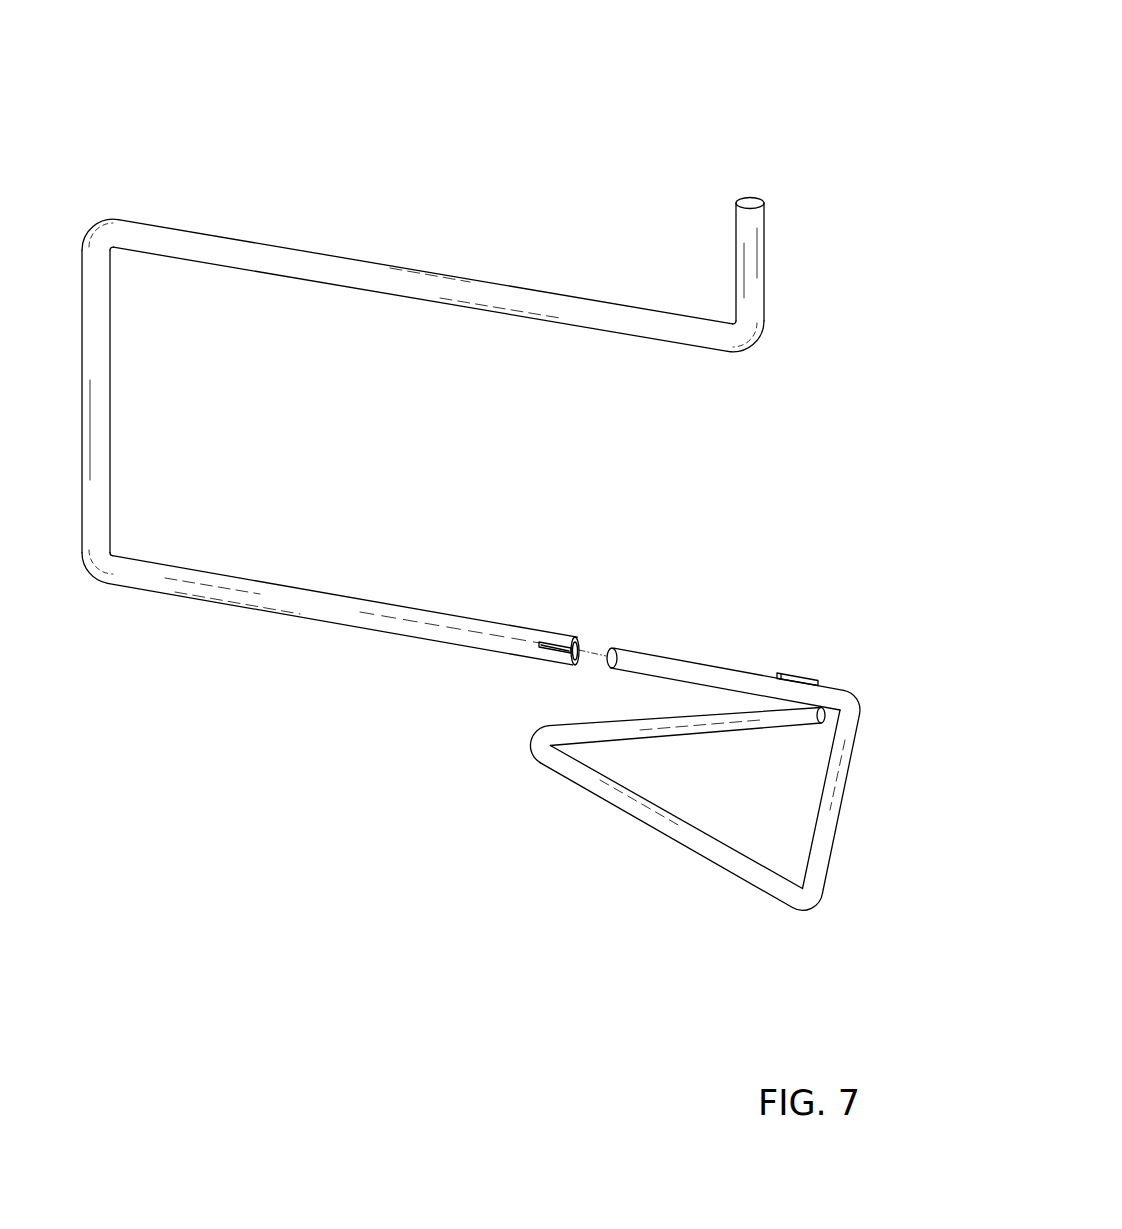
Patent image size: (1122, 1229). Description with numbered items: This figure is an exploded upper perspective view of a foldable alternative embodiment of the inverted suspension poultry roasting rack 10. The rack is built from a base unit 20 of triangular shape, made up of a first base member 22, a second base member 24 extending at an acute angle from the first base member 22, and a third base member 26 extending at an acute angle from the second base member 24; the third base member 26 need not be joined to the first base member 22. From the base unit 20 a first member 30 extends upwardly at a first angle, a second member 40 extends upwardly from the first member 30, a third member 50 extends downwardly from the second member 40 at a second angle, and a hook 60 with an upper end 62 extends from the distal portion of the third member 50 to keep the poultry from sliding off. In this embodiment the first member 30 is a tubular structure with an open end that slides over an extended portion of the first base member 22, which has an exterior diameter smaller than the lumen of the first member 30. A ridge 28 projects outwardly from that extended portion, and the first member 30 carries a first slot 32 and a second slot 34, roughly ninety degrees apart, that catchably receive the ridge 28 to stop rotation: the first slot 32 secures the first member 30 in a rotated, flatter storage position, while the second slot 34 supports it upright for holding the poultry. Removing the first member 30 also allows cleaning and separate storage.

The inverted suspension poultry roasting rack 10 is at (690, 64).
The base unit 20 is at (689, 863).
The first base member 22 is at (833, 838).
The second base member 24 is at (590, 792).
The third base member 26 is at (700, 733).
The ridge 28 is at (800, 675).
The first member 30 is at (294, 588).
The first slot 32 is at (548, 655).
The second slot 34 is at (553, 634).
The second member 40 is at (110, 402).
The third member 50 is at (305, 250).
The hook 60 is at (737, 260).
The upper end 62 is at (745, 198).